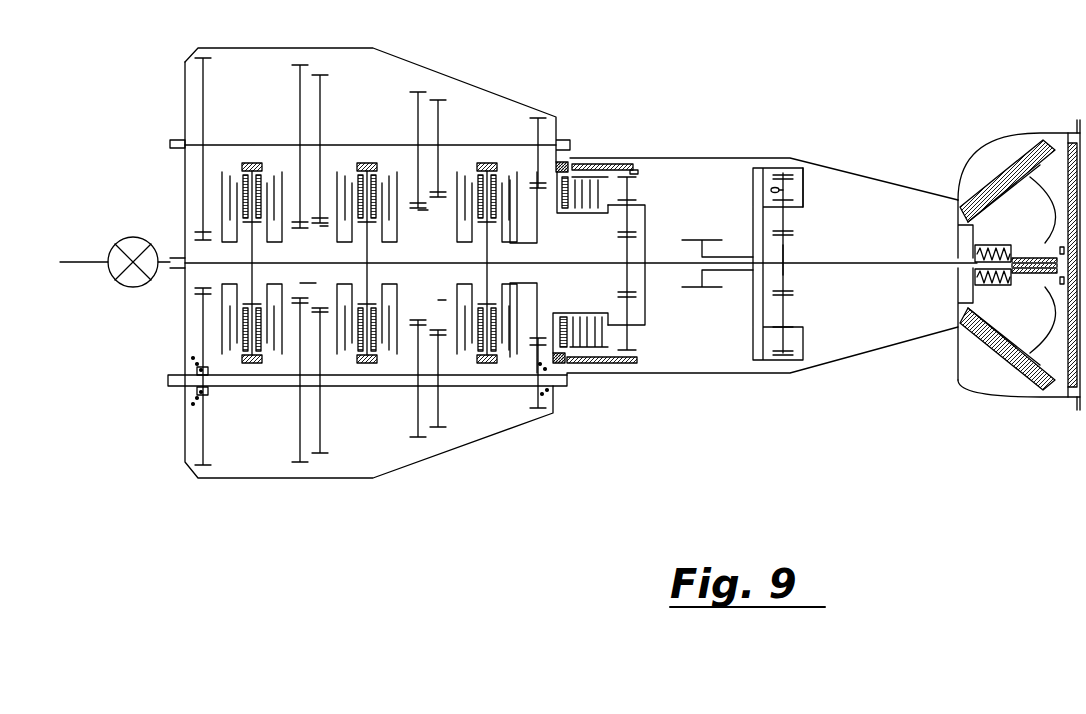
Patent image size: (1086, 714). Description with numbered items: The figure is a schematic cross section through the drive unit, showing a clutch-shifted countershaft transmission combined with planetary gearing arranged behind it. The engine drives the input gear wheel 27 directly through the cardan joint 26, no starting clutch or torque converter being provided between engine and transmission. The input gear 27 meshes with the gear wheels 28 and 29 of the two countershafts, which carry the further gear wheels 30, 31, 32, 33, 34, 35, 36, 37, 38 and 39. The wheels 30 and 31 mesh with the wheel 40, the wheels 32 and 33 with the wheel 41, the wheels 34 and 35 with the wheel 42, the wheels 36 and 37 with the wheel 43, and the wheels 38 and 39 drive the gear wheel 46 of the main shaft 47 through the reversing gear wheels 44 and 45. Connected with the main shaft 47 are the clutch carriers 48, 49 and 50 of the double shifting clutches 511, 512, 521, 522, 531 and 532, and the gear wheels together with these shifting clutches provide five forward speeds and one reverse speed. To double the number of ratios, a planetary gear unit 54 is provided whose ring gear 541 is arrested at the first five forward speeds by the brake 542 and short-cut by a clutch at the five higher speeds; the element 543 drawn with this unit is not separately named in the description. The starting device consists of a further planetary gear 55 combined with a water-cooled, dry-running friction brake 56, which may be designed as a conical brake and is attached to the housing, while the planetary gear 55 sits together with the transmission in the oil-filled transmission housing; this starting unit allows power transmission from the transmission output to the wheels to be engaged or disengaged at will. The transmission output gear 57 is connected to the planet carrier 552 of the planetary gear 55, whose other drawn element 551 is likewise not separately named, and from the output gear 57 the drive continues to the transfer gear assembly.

The cardan joint 26 is at (118, 258).
The input gear wheel 27 is at (200, 253).
The countershaft gear wheel 28 is at (207, 73).
The countershaft gear wheel 29 is at (203, 452).
The countershaft gear wheel 30 is at (300, 70).
The countershaft gear wheel 31 is at (298, 445).
The countershaft gear wheel 32 is at (322, 76).
The countershaft gear wheel 33 is at (318, 395).
The countershaft gear wheel 34 is at (410, 106).
The countershaft gear wheel 35 is at (413, 397).
The countershaft gear wheel 36 is at (440, 108).
The countershaft gear wheel 37 is at (440, 403).
The countershaft gear wheel 38 is at (540, 120).
The countershaft gear wheel 39 is at (535, 395).
The gear wheel 40 is at (298, 298).
The gear wheel 41 is at (322, 228).
The gear wheel 42 is at (420, 222).
The gear wheel 43 is at (445, 298).
The reversing gear wheel 44 is at (556, 138).
The reversing gear wheel 45 is at (537, 343).
The gear wheel of the main shaft 46 is at (533, 300).
The main shaft 47 is at (570, 267).
The clutch carrier 48 is at (252, 240).
The clutch carrier 49 is at (370, 237).
The clutch carrier 50 is at (485, 237).
The shifting clutch 511 is at (236, 180).
The shifting clutch 512 is at (268, 182).
The shifting clutch 521 is at (352, 180).
The shifting clutch 522 is at (384, 182).
The shifting clutch 531 is at (474, 180).
The shifting clutch 532 is at (505, 182).
The planetary gear unit 54 is at (632, 187).
The ring gear 541 is at (633, 170).
The brake 542 is at (613, 160).
The brake clutch lower pack 543 is at (595, 198).
The planetary gear 55 is at (783, 188).
The output clutch shaft 551 is at (783, 252).
The planet carrier 552 is at (807, 180).
The friction brake 56 is at (1043, 198).
The transmission output gear 57 is at (692, 240).